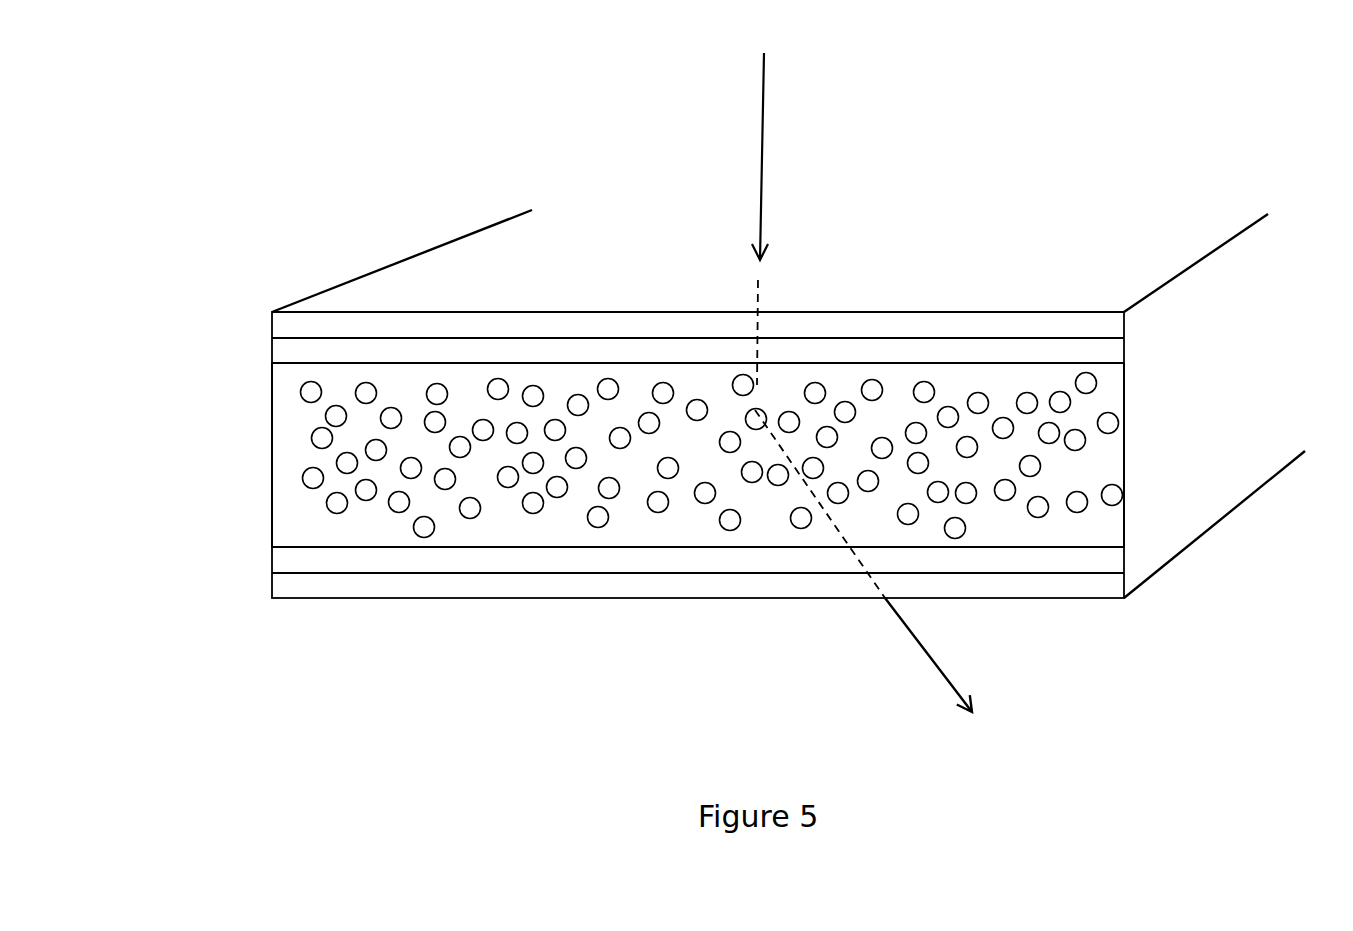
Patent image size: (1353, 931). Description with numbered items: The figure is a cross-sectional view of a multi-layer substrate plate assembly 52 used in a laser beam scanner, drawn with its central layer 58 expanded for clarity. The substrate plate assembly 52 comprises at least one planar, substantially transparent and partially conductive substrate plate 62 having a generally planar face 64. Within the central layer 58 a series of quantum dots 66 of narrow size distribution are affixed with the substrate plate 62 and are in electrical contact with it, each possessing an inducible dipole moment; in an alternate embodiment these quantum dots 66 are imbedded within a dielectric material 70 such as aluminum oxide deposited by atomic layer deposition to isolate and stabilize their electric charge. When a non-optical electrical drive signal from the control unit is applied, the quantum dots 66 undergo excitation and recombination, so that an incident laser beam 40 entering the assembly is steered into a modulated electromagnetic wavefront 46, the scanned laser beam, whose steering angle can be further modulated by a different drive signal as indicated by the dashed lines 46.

The substrate plate assembly 52 is at (604, 122).
The planar face 64 is at (477, 282).
The substrate plate 62 is at (1048, 352).
The central layer 58 is at (243, 363).
The quantum dots 66 is at (369, 493).
The dielectric material 70 is at (492, 523).
The incident laser beam 40 is at (770, 173).
The modulated electromagnetic wavefront 46 is at (895, 631).